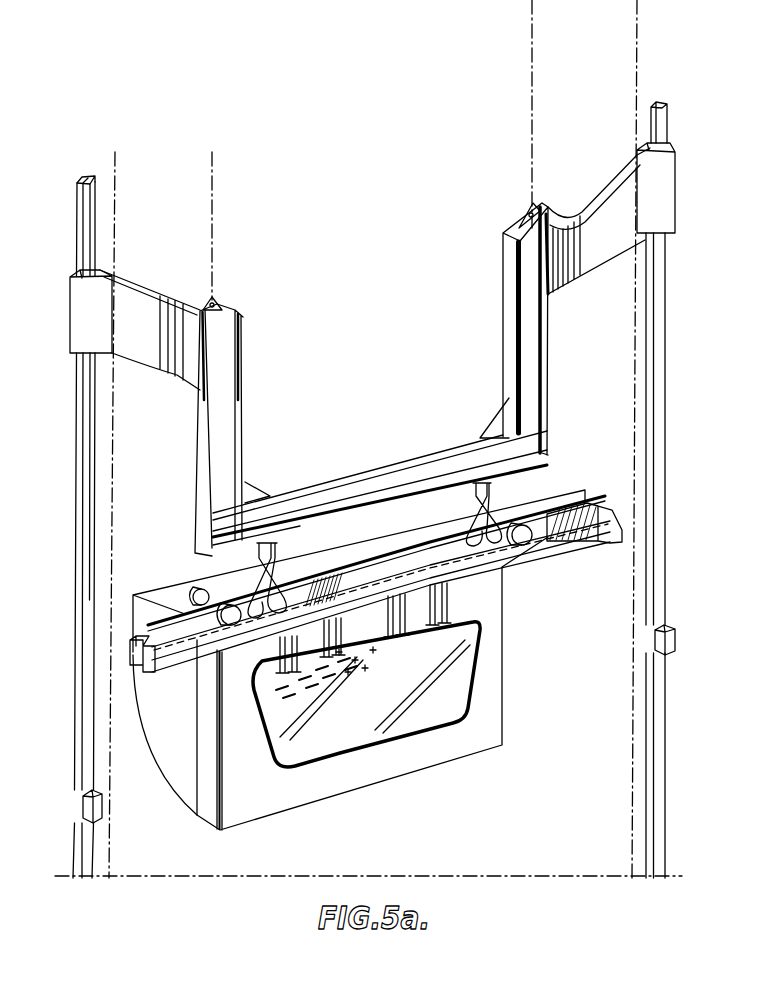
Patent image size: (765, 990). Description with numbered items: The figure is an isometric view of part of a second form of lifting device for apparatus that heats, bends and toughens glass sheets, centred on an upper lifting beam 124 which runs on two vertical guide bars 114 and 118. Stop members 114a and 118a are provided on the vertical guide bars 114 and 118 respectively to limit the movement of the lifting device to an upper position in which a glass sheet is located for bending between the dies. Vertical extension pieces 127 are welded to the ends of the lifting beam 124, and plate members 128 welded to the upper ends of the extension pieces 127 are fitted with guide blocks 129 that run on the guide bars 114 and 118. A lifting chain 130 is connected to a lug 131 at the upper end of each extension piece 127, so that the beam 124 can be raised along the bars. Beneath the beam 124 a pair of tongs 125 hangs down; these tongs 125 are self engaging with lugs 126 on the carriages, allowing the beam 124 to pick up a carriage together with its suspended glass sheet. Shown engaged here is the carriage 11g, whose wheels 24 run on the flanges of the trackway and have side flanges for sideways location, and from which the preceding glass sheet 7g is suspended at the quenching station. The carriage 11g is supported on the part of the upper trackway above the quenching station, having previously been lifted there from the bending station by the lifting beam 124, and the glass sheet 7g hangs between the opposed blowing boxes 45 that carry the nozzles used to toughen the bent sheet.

The lifting chain 130 is at (533, 117).
The vertical guide bar 118 is at (94, 505).
The stop member 118a is at (100, 810).
The guide block 129 is at (660, 168).
The plate member 128 is at (607, 255).
The lug 131 is at (528, 217).
The vertical extension piece 127 is at (525, 300).
The upper lifting beam 124 is at (370, 483).
The tongs 125 is at (463, 513).
The wheel 24 is at (193, 591).
The lug 126 is at (433, 547).
The carriage 11g is at (507, 558).
The glass sheet 7g is at (458, 678).
The blowing box 45 is at (180, 790).
The vertical guide bar 114 is at (653, 400).
The stop member 114a is at (657, 638).